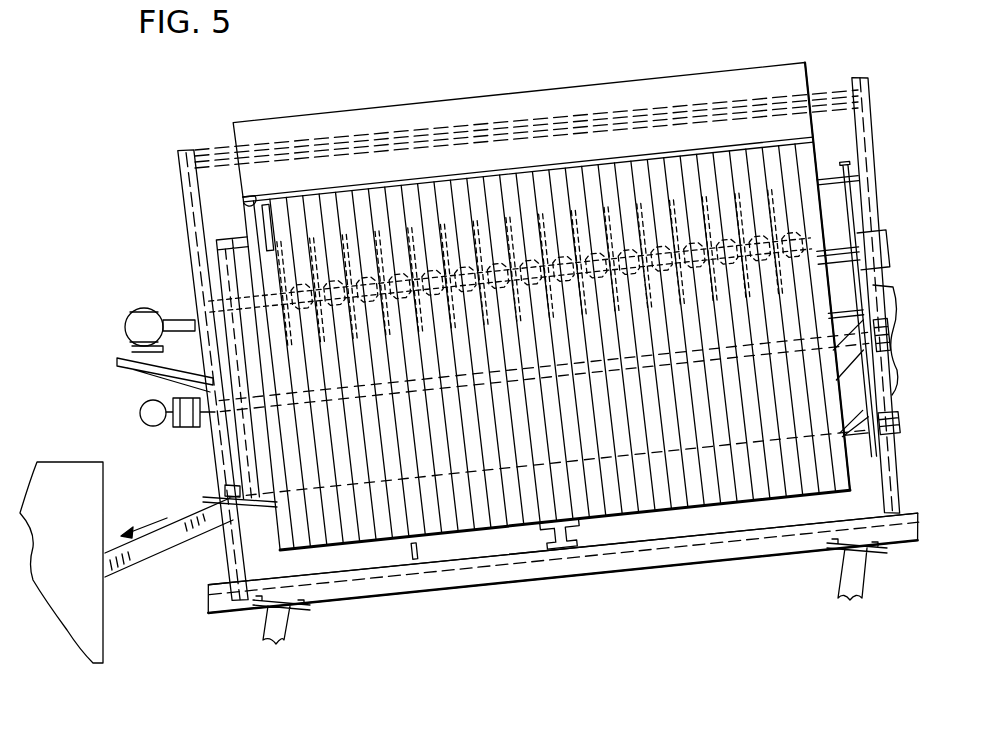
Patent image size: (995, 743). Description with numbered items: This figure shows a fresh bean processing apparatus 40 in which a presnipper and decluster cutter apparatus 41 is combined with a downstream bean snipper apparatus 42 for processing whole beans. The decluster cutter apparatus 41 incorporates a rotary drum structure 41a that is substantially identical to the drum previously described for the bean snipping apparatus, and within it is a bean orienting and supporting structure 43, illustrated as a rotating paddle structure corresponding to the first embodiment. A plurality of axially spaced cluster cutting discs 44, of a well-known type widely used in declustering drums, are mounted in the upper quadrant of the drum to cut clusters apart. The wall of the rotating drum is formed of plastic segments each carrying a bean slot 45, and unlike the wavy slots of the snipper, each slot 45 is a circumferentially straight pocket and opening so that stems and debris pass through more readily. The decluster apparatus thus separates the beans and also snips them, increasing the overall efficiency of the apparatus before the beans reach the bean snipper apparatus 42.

The bean processing apparatus 40 is at (158, 222).
The decluster cutter apparatus 41 is at (582, 593).
The rotary drum structure 41a is at (662, 519).
The bean snipper apparatus 42 is at (85, 527).
The bean orienting and supporting structure 43 is at (495, 479).
The cluster cutting discs 44 is at (610, 229).
The bean slots 45 is at (248, 203).